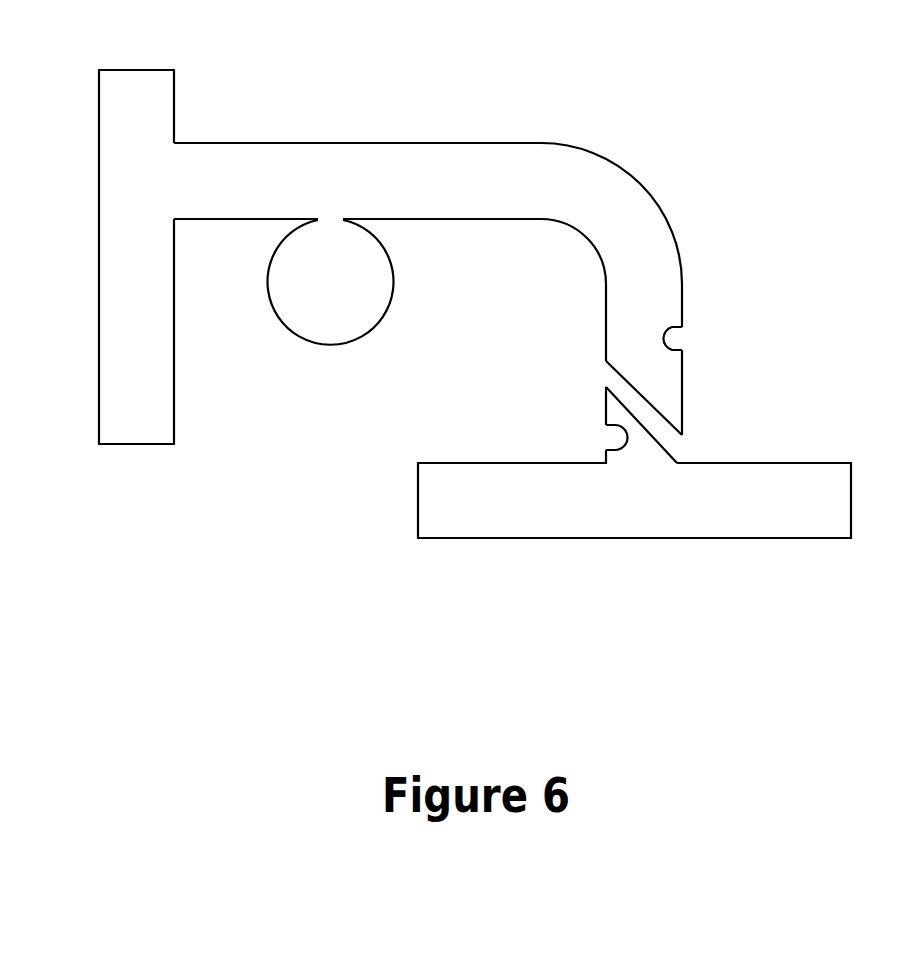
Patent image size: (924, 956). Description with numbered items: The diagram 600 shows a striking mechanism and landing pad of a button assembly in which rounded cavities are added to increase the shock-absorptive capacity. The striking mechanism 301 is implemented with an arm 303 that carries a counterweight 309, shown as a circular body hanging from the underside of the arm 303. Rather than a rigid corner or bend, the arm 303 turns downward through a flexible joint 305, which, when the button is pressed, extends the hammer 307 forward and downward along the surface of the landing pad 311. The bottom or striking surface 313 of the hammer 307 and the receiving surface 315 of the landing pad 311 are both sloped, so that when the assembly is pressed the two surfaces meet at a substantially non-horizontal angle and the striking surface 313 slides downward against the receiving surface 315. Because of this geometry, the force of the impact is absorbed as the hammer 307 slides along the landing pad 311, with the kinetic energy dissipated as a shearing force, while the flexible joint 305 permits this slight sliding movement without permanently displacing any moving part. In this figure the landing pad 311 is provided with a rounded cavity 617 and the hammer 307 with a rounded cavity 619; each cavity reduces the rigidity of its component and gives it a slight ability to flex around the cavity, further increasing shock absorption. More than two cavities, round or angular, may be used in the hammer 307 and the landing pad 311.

The striking mechanism 301 is at (99, 270).
The arm 303 is at (347, 189).
The flexible joint 305 is at (638, 182).
The hammer 307 is at (605, 301).
The counterweight 309 is at (393, 280).
The landing pad 311 is at (851, 506).
The striking surface 313 is at (613, 370).
The receiving surface 315 is at (664, 445).
The cavity 617 is at (614, 440).
The cavity 619 is at (681, 338).
The diagram 600 is at (497, 672).